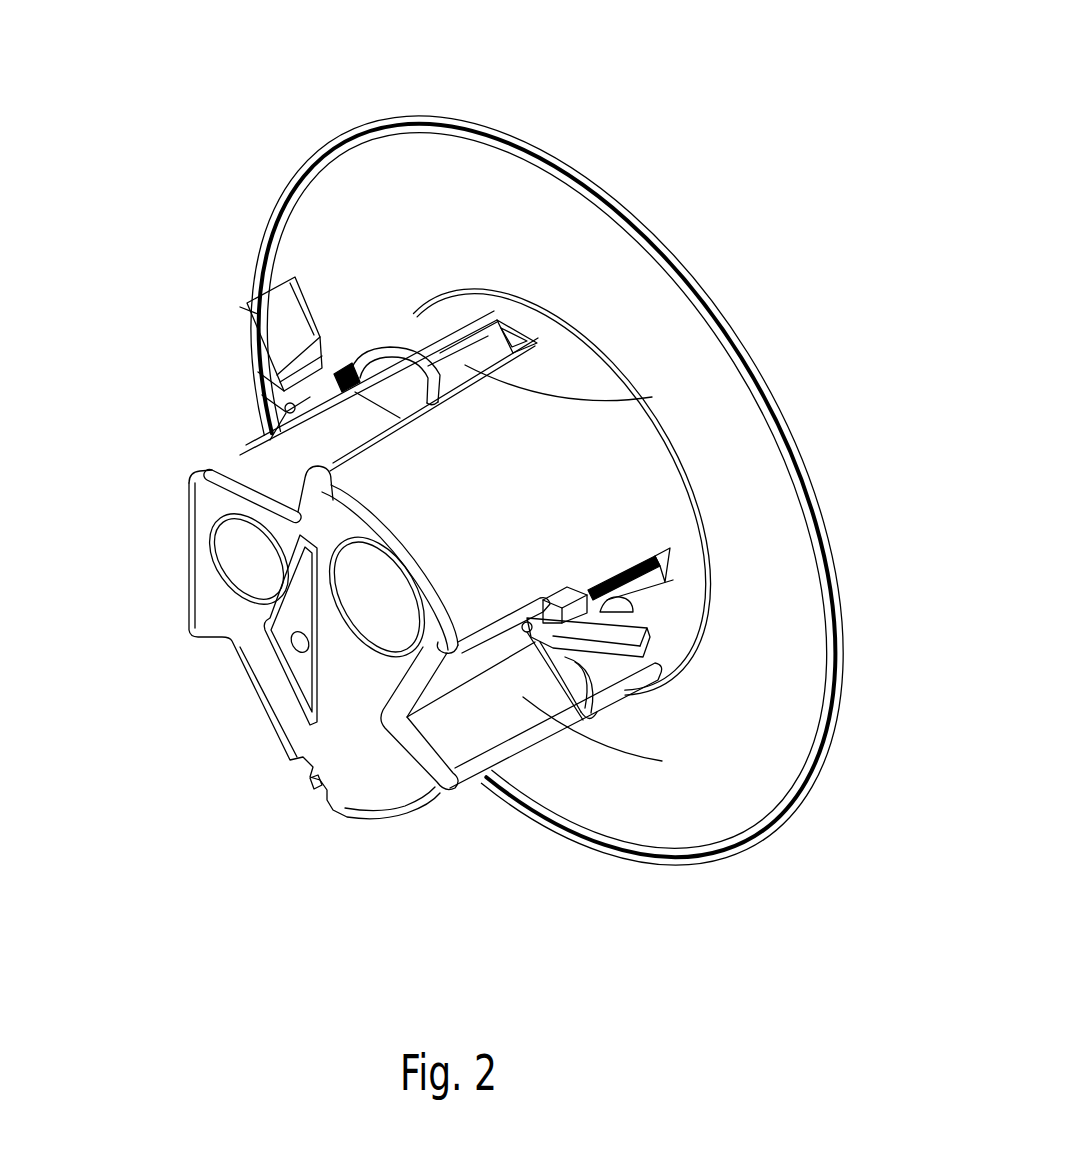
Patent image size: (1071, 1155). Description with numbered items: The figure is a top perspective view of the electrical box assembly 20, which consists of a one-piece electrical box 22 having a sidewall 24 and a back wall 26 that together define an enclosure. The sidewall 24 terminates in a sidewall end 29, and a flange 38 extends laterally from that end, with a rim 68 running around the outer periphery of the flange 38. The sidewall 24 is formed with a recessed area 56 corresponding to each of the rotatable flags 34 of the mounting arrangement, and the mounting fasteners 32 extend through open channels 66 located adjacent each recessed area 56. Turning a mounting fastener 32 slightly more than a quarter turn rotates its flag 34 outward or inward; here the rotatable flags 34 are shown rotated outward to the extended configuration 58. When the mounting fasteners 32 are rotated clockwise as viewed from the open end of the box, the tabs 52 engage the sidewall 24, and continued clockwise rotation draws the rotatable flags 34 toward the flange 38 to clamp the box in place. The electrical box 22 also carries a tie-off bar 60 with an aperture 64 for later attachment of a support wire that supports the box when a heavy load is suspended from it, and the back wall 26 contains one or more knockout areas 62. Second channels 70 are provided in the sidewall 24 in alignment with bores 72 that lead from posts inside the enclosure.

The electrical box assembly 20 is at (228, 160).
The electrical box 22 is at (540, 147).
The sidewall 24 is at (493, 526).
The back wall 26 is at (340, 707).
The sidewall end 29 is at (675, 462).
The mounting fasteners 32 is at (648, 600).
The rotatable flags 34 is at (243, 302).
The flange 38 is at (494, 225).
The tabs 52 is at (288, 409).
The recessed area 56 is at (350, 425).
The extended configuration 58 is at (320, 297).
The tie-off bar 60 is at (265, 635).
The knockout areas 62 is at (233, 573).
The aperture 64 is at (300, 645).
The open channels 66 is at (640, 561).
The rim 68 is at (693, 275).
The second channels 70 is at (652, 397).
The bores 72 is at (520, 333).